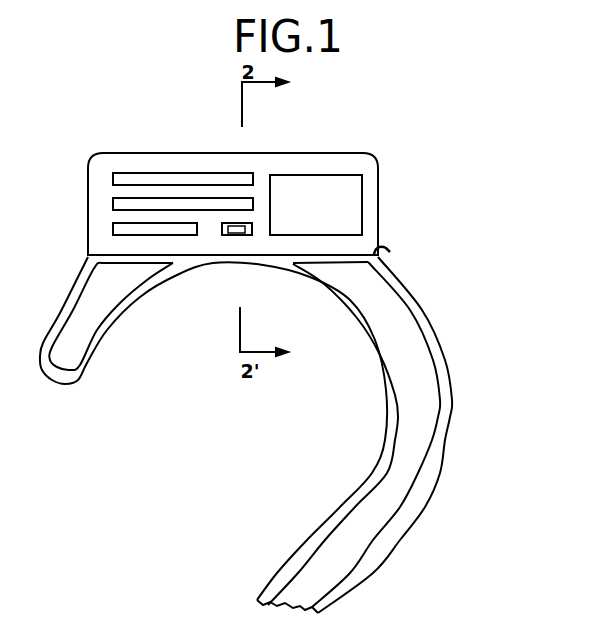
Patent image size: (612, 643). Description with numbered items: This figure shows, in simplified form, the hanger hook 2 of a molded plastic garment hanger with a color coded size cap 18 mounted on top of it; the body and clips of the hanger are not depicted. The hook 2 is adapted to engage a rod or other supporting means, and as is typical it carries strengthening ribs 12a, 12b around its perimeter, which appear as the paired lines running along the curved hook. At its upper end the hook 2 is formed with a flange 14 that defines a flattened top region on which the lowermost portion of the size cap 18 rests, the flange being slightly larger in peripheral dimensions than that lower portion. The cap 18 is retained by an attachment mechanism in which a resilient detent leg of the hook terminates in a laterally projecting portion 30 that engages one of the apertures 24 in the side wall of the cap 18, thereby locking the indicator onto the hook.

The hanger hook 2 is at (305, 435).
The strengthening rib 12a is at (388, 415).
The strengthening rib 12b is at (450, 417).
The flange 14 is at (378, 252).
The color coded size cap 18 is at (373, 160).
The aperture 24 is at (242, 227).
The laterally projecting portion 30 is at (230, 235).